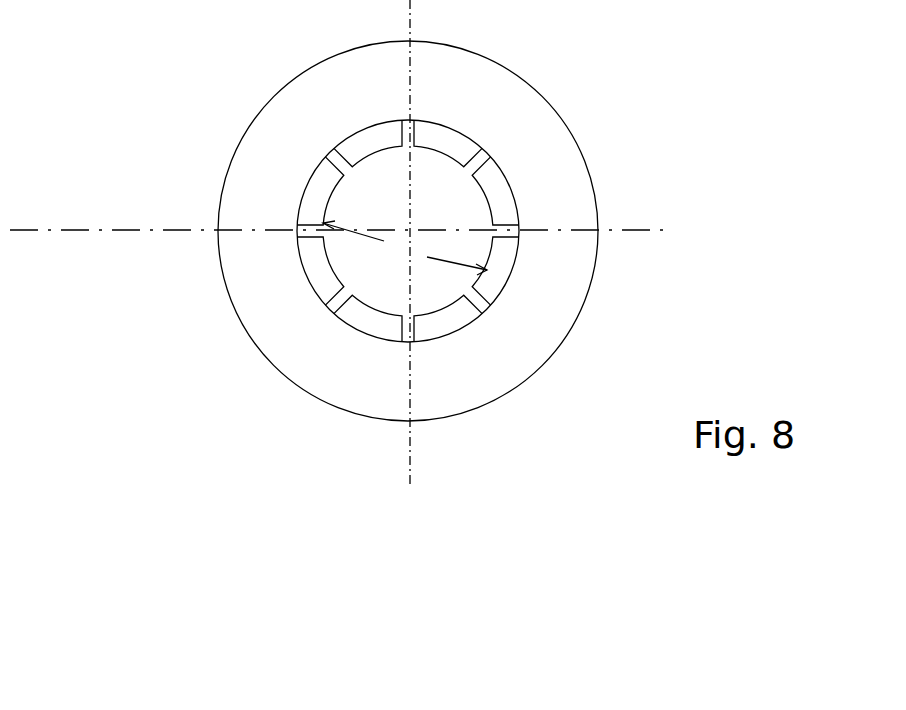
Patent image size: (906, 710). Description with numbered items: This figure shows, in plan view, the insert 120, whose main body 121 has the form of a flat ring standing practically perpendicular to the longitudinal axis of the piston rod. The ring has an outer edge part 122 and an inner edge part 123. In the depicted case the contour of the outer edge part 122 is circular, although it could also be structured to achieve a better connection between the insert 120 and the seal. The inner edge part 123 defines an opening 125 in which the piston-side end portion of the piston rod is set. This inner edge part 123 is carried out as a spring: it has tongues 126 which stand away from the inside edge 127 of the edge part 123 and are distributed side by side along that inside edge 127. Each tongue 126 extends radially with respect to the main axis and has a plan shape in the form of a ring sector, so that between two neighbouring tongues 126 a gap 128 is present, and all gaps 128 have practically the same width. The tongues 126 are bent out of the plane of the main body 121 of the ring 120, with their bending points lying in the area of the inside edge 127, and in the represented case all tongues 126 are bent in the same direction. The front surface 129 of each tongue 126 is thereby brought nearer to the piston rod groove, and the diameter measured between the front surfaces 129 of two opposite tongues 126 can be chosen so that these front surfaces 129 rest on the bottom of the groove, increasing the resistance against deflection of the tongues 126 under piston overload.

The insert 120 is at (208, 103).
The main body 121 is at (562, 150).
The outer edge part 122 is at (582, 308).
The inner edge part 123 is at (320, 302).
The opening 125 is at (422, 208).
The tongue 126 is at (476, 168).
The inside edge 127 is at (372, 342).
The gap 128 is at (412, 338).
The front surface 129 is at (466, 297).